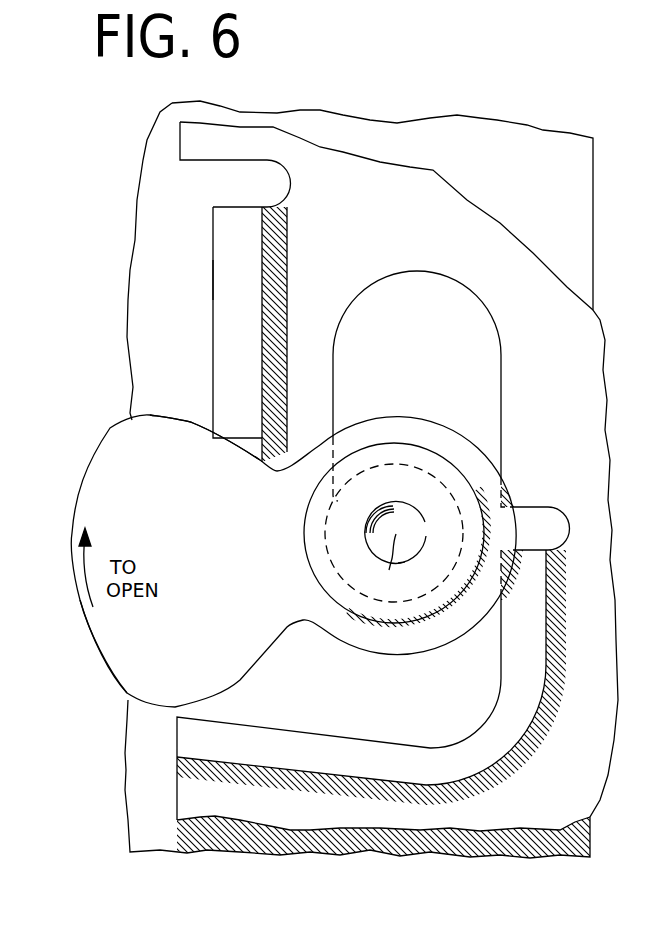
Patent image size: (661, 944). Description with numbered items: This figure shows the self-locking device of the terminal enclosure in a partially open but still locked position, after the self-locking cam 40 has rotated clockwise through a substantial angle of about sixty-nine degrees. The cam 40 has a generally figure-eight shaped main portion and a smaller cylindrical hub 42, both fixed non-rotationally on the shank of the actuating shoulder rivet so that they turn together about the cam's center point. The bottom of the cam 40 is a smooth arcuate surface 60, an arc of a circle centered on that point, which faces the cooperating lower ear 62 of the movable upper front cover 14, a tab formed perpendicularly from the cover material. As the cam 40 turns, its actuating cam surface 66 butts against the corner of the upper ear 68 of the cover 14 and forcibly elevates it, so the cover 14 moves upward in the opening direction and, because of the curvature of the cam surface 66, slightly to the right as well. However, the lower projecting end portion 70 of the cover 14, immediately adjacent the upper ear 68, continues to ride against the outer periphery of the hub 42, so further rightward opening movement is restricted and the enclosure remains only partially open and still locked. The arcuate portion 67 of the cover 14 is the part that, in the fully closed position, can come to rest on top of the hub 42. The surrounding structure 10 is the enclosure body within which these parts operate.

The housing body 10 is at (497, 120).
The upper front cover 14 is at (213, 210).
The upper ear 68 is at (213, 285).
The arcuate portion 67 is at (425, 273).
The lower ear 62 is at (177, 767).
The self-locking cam 40 is at (195, 662).
The actuating cam surface 66 is at (198, 428).
The arcuate surface 60 is at (93, 655).
The lower projecting end portion 70 is at (325, 514).
The hub portion 42 is at (330, 552).